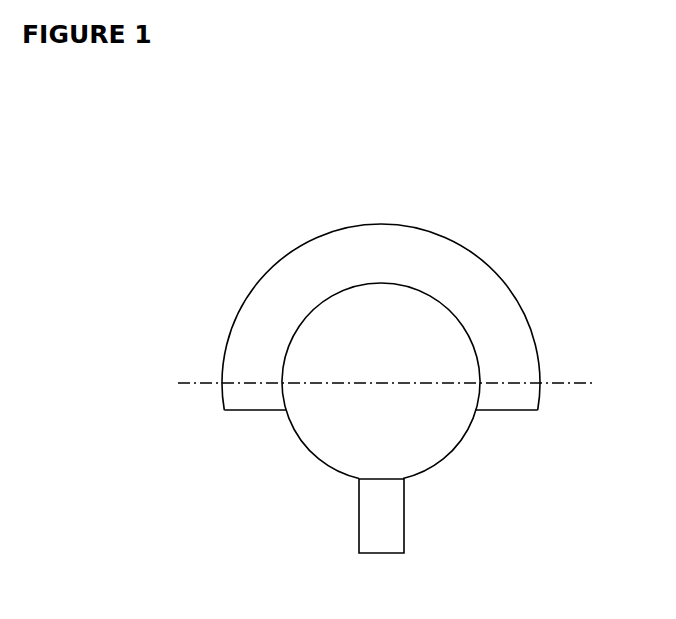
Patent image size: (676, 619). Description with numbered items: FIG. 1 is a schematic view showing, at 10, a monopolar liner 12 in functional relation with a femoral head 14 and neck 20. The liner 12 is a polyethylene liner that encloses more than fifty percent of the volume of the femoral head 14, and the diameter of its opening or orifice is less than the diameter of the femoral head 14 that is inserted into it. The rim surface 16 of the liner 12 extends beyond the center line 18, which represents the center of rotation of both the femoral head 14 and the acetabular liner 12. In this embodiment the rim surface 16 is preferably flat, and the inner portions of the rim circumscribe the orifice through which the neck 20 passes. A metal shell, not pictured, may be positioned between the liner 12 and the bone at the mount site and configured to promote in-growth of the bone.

The monopolar liner assembly 10 is at (129, 146).
The liner 12 is at (478, 312).
The femoral head 14 is at (345, 447).
The rim surface 16 is at (508, 418).
The center line 18 is at (177, 385).
The neck 20 is at (373, 522).